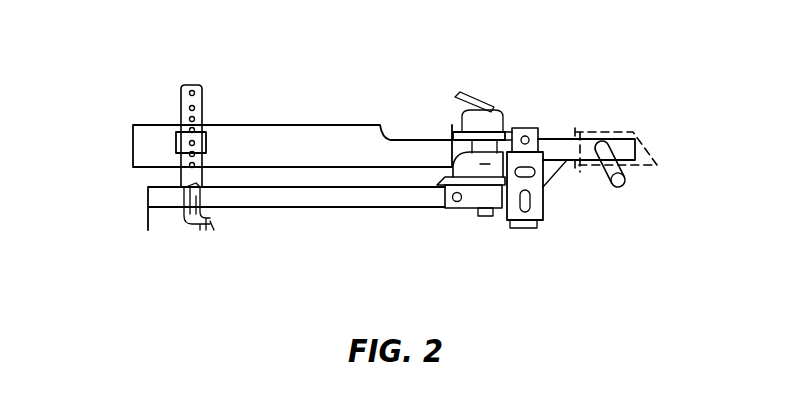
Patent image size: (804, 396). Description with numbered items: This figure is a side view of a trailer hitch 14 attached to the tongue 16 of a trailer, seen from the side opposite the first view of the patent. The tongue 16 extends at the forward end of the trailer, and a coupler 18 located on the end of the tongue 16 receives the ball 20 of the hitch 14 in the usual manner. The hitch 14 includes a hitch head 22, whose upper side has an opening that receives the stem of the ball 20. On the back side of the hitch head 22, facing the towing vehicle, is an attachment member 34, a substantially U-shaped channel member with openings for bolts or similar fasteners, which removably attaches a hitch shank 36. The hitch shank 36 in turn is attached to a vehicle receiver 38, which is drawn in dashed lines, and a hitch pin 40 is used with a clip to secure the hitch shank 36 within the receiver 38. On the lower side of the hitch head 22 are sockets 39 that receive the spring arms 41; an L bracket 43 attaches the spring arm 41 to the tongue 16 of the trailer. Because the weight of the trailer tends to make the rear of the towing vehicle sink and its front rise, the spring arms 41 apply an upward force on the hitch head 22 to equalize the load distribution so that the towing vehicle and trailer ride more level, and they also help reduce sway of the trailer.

The trailer hitch 14 is at (492, 240).
The tongue 16 is at (273, 130).
The coupler 18 is at (485, 120).
The ball 20 is at (508, 152).
The hitch head 22 is at (437, 172).
The attachment member 34 is at (542, 216).
The hitch shank 36 is at (557, 141).
The vehicle receiver 38 is at (653, 164).
The sockets 39 is at (462, 205).
The hitch pin 40 is at (621, 183).
The spring arm 41 is at (322, 200).
The L bracket 43 is at (183, 86).